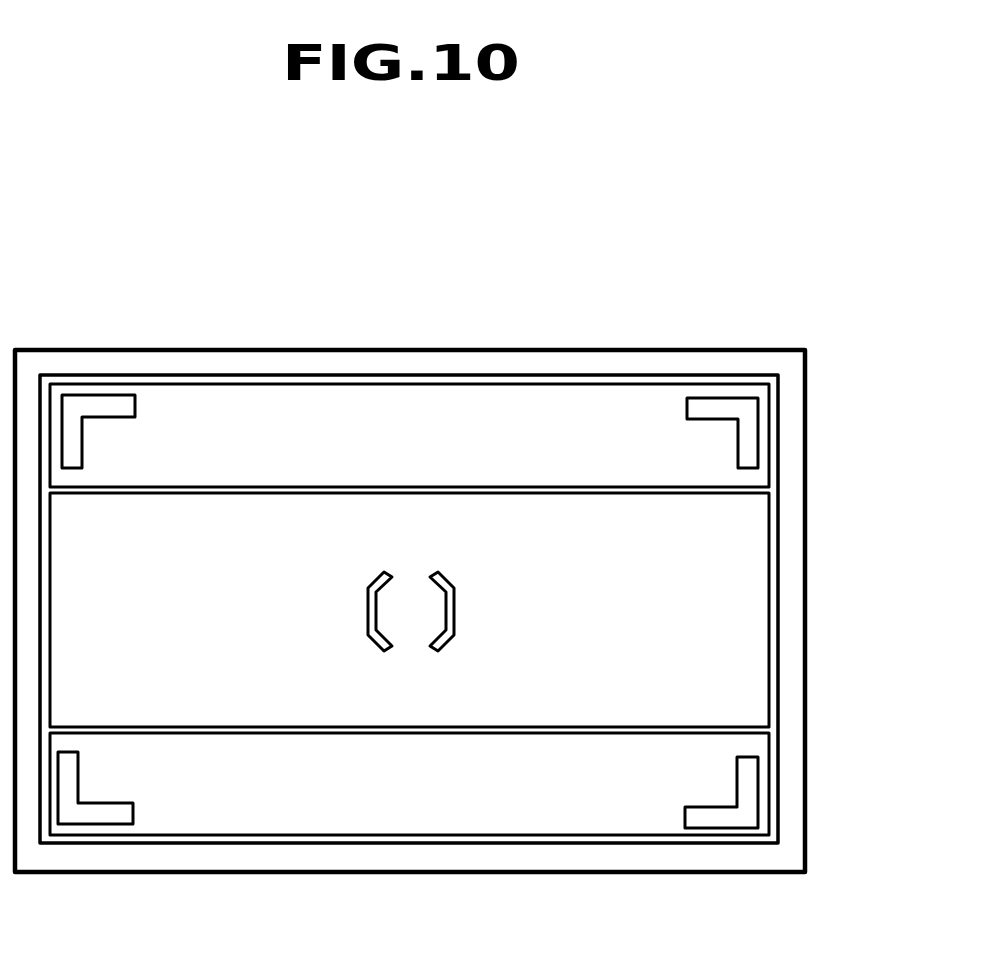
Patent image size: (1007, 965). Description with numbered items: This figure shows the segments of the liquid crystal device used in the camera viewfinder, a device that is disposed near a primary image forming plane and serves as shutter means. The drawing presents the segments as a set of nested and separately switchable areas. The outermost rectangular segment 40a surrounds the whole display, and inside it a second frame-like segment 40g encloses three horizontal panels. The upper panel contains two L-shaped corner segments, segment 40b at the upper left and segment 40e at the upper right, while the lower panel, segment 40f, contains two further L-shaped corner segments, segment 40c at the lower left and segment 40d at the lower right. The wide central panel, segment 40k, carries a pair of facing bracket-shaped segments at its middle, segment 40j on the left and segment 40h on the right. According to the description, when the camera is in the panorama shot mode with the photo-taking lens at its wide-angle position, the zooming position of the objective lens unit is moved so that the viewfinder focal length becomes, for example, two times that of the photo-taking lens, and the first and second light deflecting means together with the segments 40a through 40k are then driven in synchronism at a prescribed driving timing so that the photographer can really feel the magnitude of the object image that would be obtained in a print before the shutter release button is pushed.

The segment of liquid crystal device 40a is at (337, 365).
The segment of liquid crystal device 40b is at (112, 405).
The segment of liquid crystal device 40c is at (103, 818).
The segment of liquid crystal device 40d is at (710, 820).
The segment of liquid crystal device 40e is at (715, 405).
The segment of liquid crystal device 40f is at (727, 750).
The segment of liquid crystal device 40g is at (727, 479).
The segment of liquid crystal device 40h is at (454, 615).
The segment of liquid crystal device 40j is at (368, 609).
The segment of liquid crystal device 40k is at (735, 626).